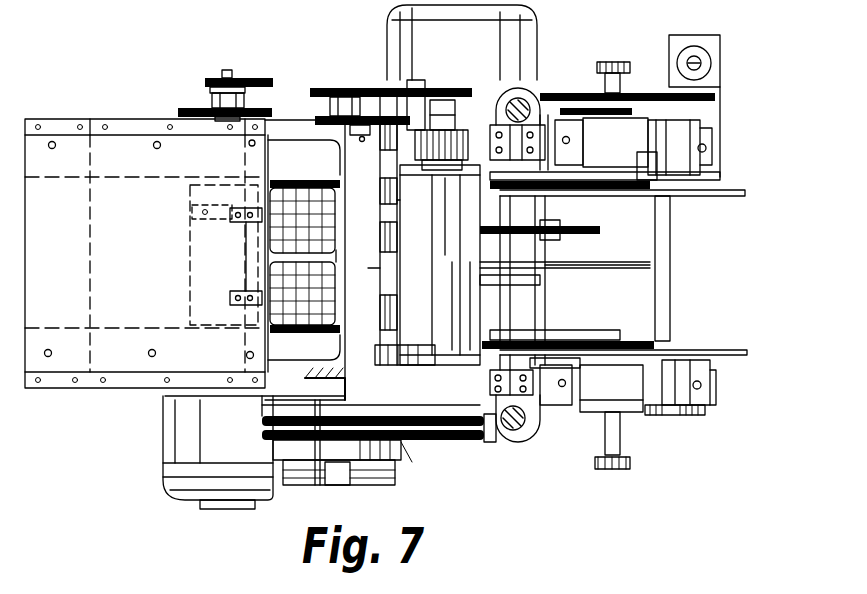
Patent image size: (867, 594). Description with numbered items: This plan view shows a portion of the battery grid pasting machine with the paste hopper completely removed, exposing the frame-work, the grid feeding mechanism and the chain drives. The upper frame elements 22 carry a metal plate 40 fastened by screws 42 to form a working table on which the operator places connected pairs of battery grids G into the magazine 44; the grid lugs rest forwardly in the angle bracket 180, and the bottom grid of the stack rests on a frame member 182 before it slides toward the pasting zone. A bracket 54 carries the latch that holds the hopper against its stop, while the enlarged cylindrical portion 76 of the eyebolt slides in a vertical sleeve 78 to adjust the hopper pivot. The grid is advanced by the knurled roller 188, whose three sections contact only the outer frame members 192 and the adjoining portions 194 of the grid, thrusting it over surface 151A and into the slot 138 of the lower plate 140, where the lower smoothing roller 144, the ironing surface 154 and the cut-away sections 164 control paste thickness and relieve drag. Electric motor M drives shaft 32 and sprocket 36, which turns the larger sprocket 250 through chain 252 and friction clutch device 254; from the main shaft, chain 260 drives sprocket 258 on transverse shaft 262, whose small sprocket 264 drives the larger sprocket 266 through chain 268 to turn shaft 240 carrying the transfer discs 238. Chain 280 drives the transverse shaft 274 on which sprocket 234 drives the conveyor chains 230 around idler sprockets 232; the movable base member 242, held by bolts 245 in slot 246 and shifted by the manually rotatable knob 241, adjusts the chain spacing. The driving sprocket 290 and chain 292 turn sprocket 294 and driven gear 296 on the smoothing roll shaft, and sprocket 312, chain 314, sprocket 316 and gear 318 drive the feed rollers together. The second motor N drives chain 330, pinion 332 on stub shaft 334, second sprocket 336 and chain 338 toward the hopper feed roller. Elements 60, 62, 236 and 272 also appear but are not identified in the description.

The upper frame elements 22 is at (712, 150).
The drive shaft 32 is at (462, 442).
The sprocket 36 is at (488, 442).
The metal plate 40 is at (118, 140).
The screws 42 is at (52, 149).
The magazine 44 is at (238, 225).
The bracket 54 is at (305, 378).
The reel 60 is at (708, 68).
The reel housing 62 is at (712, 58).
The enlarged cylindrical portion 76 is at (512, 98).
The vertical sleeve 78 is at (538, 95).
The slot 138 is at (440, 220).
The lower plate 140 is at (380, 278).
The lower smoothing roller 144 is at (445, 232).
The surface 151A is at (398, 210).
The plane surface 154 is at (448, 276).
The cut-away sections 164 is at (468, 288).
The angle bracket 180 is at (330, 165).
The frame member 182 is at (250, 147).
The knurled roller 188 is at (380, 186).
The outer frame members 192 is at (282, 186).
The adjoining portions 194 is at (337, 256).
The conveyor chains 230 is at (580, 188).
The idler sprockets 232 is at (625, 188).
The sprocket 234 is at (520, 196).
The rod 236 is at (612, 270).
The transfer discs 238 is at (735, 190).
The transverse shaft 240 is at (672, 240).
The manually rotatable knob 241 is at (580, 64).
The movable base member 242 is at (635, 120).
The bolts 245 is at (706, 152).
The slot 246 is at (712, 132).
The larger sprocket 250 is at (365, 485).
The chain 252 is at (440, 443).
The friction clutch device 254 is at (420, 458).
The larger sprocket 258 is at (600, 232).
The chain 260 is at (585, 234).
The transverse shaft 262 is at (552, 240).
The small sprocket 264 is at (550, 93).
The larger sprocket 266 is at (718, 98).
The chain 268 is at (705, 112).
The housing 272 is at (577, 368).
The transverse shaft 274 is at (510, 282).
The chain 280 is at (548, 395).
The driving sprocket 290 is at (350, 88).
The chain 292 is at (410, 78).
The sprocket 294 is at (443, 98).
The driven gear 296 is at (432, 170).
The sprocket 312 is at (318, 120).
The chain 314 is at (320, 102).
The sprocket 316 is at (385, 140).
The gear 318 is at (404, 376).
The chain 330 is at (213, 81).
The pinion 332 is at (178, 112).
The stub shaft 334 is at (230, 60).
The second sprocket 336 is at (210, 88).
The chain 338 is at (257, 74).
The battery grids G is at (300, 192).
The electric motor M is at (535, 40).
The second motor N is at (170, 432).